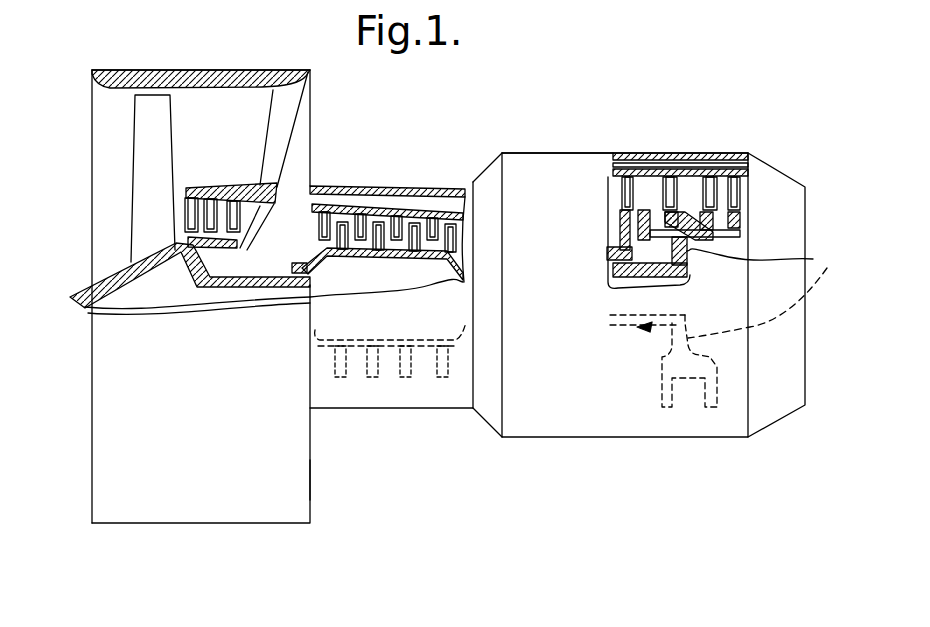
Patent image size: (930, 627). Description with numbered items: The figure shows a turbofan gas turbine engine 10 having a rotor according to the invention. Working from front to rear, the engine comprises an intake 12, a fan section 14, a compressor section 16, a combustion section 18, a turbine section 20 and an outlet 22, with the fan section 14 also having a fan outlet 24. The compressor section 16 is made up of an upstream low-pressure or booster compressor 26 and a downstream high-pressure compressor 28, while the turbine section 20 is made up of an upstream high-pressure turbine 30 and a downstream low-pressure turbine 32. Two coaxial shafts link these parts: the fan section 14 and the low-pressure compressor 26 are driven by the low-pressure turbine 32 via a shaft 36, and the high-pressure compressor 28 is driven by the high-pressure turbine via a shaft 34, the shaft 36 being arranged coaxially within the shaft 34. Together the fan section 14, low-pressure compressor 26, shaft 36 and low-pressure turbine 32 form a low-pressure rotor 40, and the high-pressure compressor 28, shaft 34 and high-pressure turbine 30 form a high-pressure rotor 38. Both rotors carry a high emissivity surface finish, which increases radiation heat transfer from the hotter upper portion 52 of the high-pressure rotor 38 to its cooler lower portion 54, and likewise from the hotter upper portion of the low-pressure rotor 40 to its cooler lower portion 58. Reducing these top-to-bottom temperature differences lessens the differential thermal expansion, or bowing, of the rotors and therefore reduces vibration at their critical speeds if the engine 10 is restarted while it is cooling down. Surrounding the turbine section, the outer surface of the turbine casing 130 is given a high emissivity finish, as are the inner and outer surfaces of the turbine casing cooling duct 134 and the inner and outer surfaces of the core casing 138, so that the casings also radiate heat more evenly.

The turbofan gas turbine engine 10 is at (491, 110).
The intake 12 is at (92, 136).
The fan section 14 is at (207, 500).
The compressor section 16 is at (390, 373).
The combustion section 18 is at (546, 413).
The turbine section 20 is at (681, 400).
The outlet 22 is at (760, 407).
The fan outlet 24 is at (311, 478).
The low-pressure compressor 26 is at (240, 210).
The high-pressure compressor 28 is at (390, 213).
The high-pressure turbine 30 is at (612, 222).
The low-pressure turbine 32 is at (682, 217).
The shaft 34 is at (421, 255).
The shaft 36 is at (633, 283).
The high-pressure rotor 38 is at (366, 266).
The low-pressure rotor 40 is at (228, 298).
The upper portion of the high pressure rotor 52 is at (433, 200).
The lower portion of the high pressure rotor 54 is at (358, 375).
The lower portion of the low pressure rotor 58 is at (766, 290).
The turbine casing 130 is at (728, 157).
The turbine casing cooling duct 134 is at (667, 143).
The core casing 138 is at (340, 188).